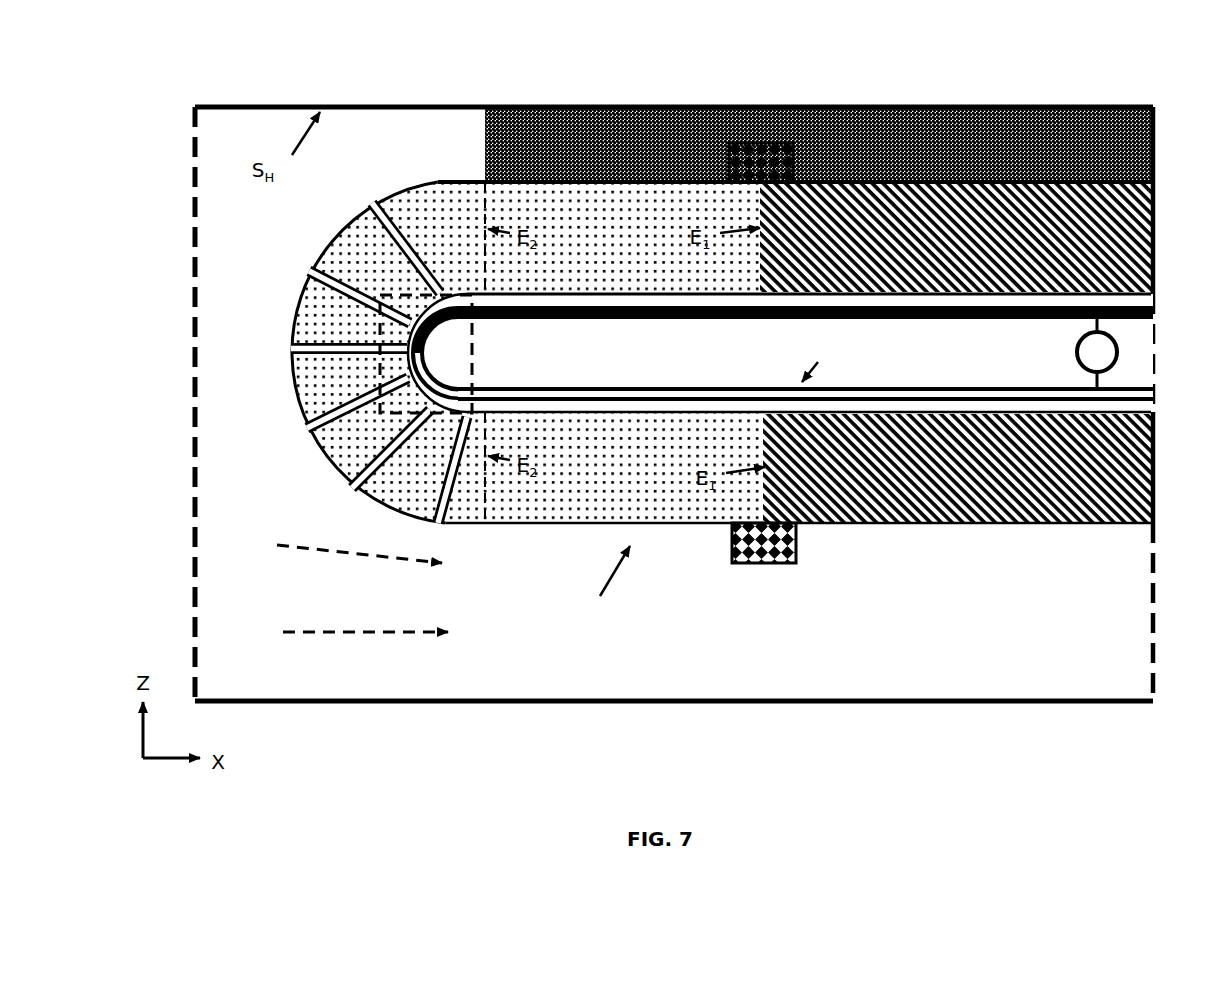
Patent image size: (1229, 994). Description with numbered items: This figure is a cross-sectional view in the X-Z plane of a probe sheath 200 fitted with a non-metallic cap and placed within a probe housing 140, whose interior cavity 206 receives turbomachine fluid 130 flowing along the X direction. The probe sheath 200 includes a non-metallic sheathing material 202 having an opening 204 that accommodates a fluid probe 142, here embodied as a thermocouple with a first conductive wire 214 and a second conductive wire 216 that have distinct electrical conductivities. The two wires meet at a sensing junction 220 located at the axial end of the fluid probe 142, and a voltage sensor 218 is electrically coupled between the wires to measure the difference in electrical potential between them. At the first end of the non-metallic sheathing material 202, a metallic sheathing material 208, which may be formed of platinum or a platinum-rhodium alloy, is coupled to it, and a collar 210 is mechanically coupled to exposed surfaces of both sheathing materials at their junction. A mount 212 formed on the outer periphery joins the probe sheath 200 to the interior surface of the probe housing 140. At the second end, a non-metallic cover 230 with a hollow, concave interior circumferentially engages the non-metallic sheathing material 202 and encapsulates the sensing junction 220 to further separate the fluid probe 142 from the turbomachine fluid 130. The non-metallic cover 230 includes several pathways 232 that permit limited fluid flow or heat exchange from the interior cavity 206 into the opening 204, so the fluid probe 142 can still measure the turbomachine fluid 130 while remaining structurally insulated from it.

The turbomachine fluid 130 is at (341, 589).
The probe housing 140 is at (362, 104).
The fluid probe 142 is at (815, 360).
The probe sheath 200 is at (598, 584).
The non-metallic sheathing material 202 is at (450, 200).
The opening 204 is at (780, 353).
The interior cavity 206 is at (298, 590).
The metallic sheathing material 208 is at (1135, 247).
The collar 210 is at (773, 148).
The mount 212 is at (561, 128).
The first conductive wire 214 is at (628, 319).
The second conductive wire 216 is at (636, 388).
The voltage sensor 218 is at (1088, 349).
The sensing junction 220 is at (474, 362).
The non-metallic cover 230 is at (300, 383).
The pathways 232 is at (372, 214).